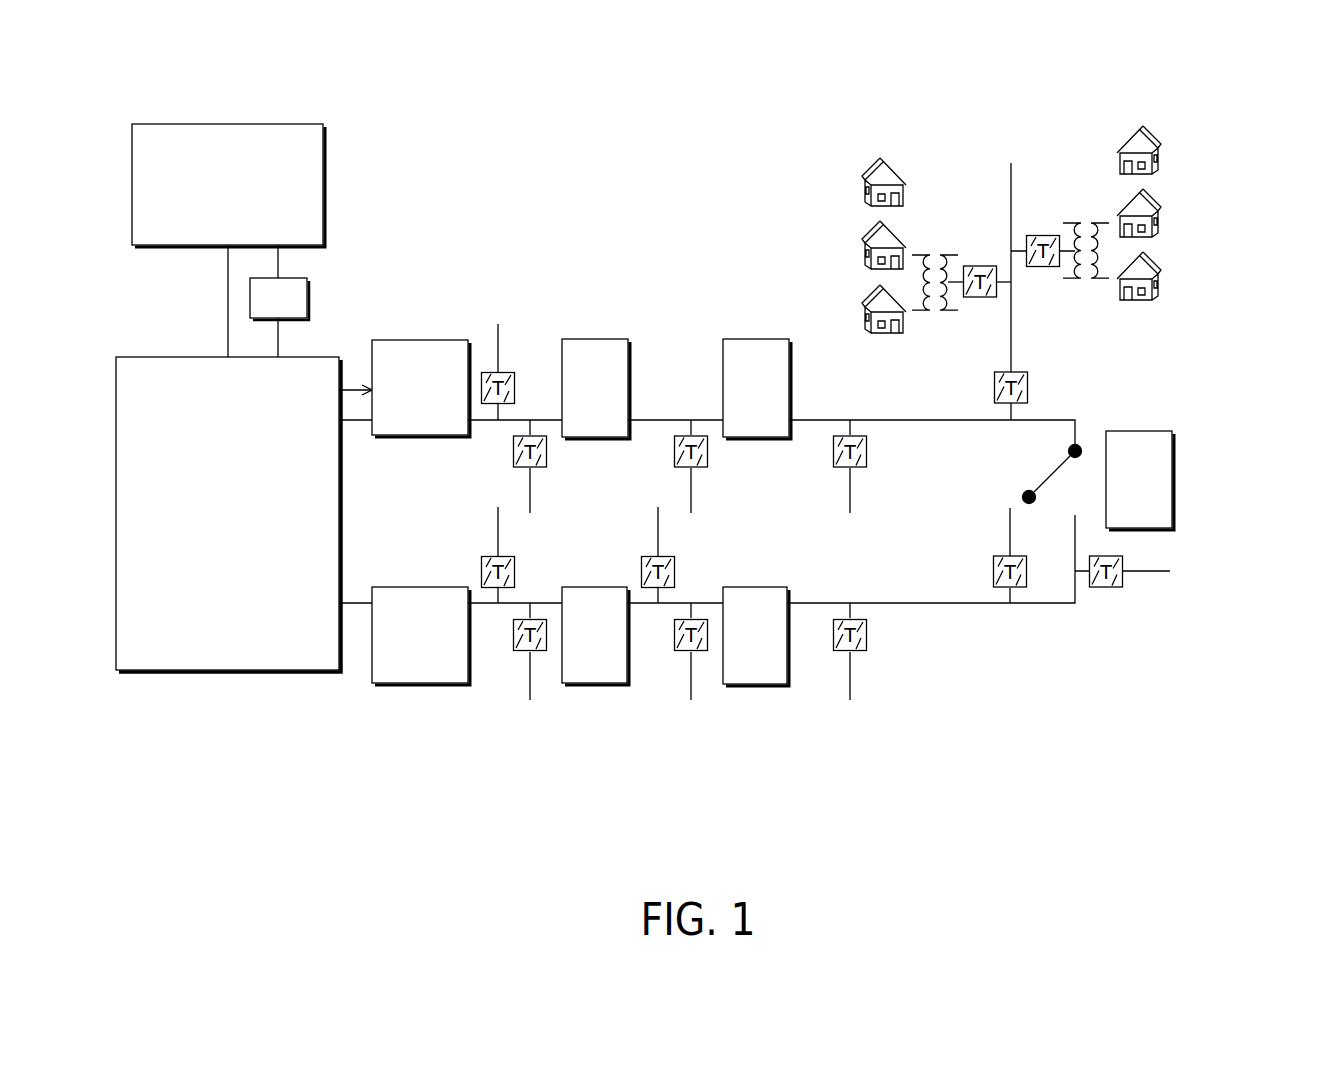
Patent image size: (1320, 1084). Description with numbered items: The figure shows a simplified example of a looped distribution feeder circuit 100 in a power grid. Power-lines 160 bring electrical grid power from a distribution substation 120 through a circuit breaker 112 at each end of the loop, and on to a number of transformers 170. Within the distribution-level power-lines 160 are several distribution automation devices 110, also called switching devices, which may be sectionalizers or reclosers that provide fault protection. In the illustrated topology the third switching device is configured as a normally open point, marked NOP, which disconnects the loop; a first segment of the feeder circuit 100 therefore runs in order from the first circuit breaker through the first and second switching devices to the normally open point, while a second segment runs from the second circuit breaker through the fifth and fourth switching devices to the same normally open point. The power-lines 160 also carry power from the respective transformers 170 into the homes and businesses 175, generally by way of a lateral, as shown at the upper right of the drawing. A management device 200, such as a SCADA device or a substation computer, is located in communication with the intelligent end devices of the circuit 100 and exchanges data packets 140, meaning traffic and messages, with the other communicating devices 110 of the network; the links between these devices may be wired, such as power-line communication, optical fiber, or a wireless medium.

The distribution feeder circuit 100 is at (1197, 147).
The distribution automation device 110 is at (577, 415).
The circuit breaker 112 is at (402, 415).
The distribution substation 120 is at (208, 550).
The data packets 140 is at (261, 311).
The power-lines 160 is at (813, 419).
The transformer 170 is at (838, 468).
The homes/businesses 175 is at (867, 233).
The management device 200 is at (210, 222).